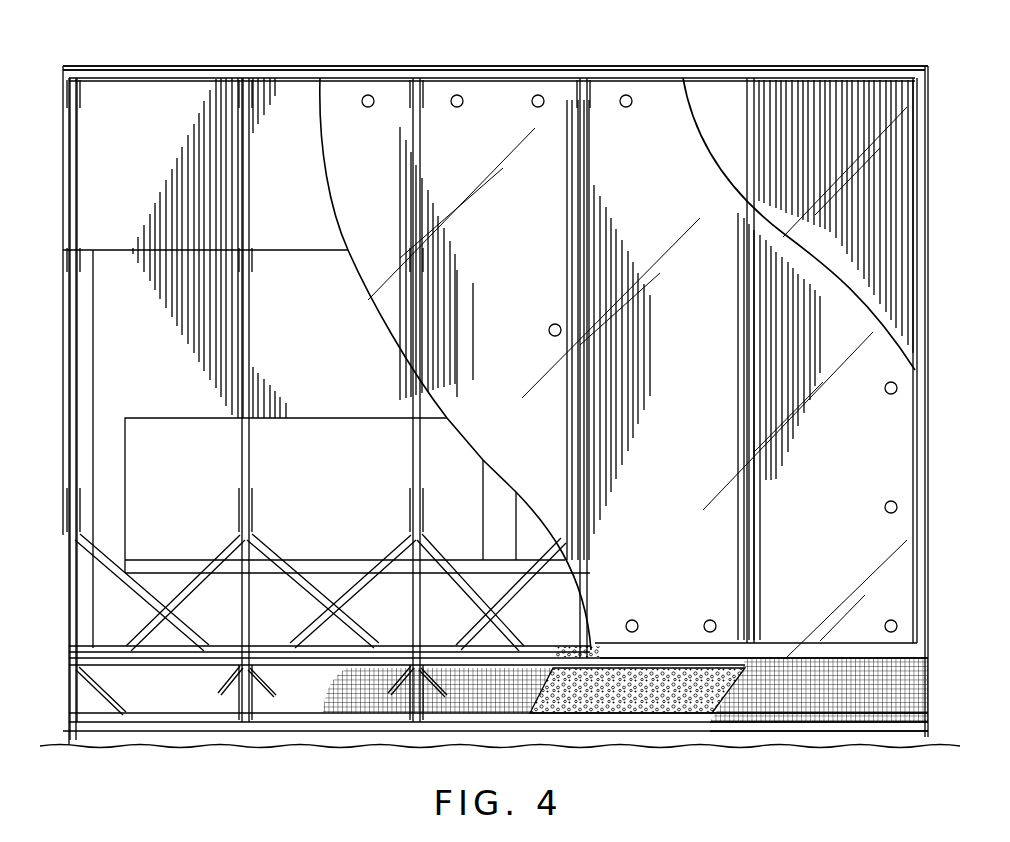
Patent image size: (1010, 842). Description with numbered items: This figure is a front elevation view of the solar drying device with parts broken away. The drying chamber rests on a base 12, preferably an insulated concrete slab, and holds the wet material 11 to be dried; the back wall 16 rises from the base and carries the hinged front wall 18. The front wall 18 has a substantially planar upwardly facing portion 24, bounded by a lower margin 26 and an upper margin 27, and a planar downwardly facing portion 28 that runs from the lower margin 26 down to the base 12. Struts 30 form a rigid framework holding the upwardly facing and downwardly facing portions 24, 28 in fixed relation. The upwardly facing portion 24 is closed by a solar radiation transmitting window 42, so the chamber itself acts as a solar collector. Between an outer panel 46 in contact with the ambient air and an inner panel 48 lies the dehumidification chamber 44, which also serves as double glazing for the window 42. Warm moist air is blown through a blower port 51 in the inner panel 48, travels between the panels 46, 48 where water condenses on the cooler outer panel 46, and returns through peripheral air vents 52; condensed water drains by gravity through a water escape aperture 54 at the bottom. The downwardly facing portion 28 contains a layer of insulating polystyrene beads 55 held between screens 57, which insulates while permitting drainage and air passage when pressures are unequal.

The wet material 11 is at (193, 417).
The base 12 is at (72, 740).
The back wall 16 is at (100, 365).
The front wall 18 is at (880, 87).
The upwardly facing portion 24 is at (932, 175).
The lower margin 26 is at (917, 658).
The upper margin 27 is at (908, 67).
The downwardly facing portion 28 is at (928, 703).
The struts 30 is at (408, 403).
The window 42 is at (912, 122).
The dehumidification chamber 44 is at (812, 85).
The outer panel 46 is at (740, 85).
The inner panel 48 is at (668, 80).
The blower port 51 is at (551, 323).
The air vents 52 is at (534, 94).
The water escape aperture 54 is at (703, 621).
The insulating polystyrene beads 55 is at (663, 713).
The screens 57 is at (363, 708).